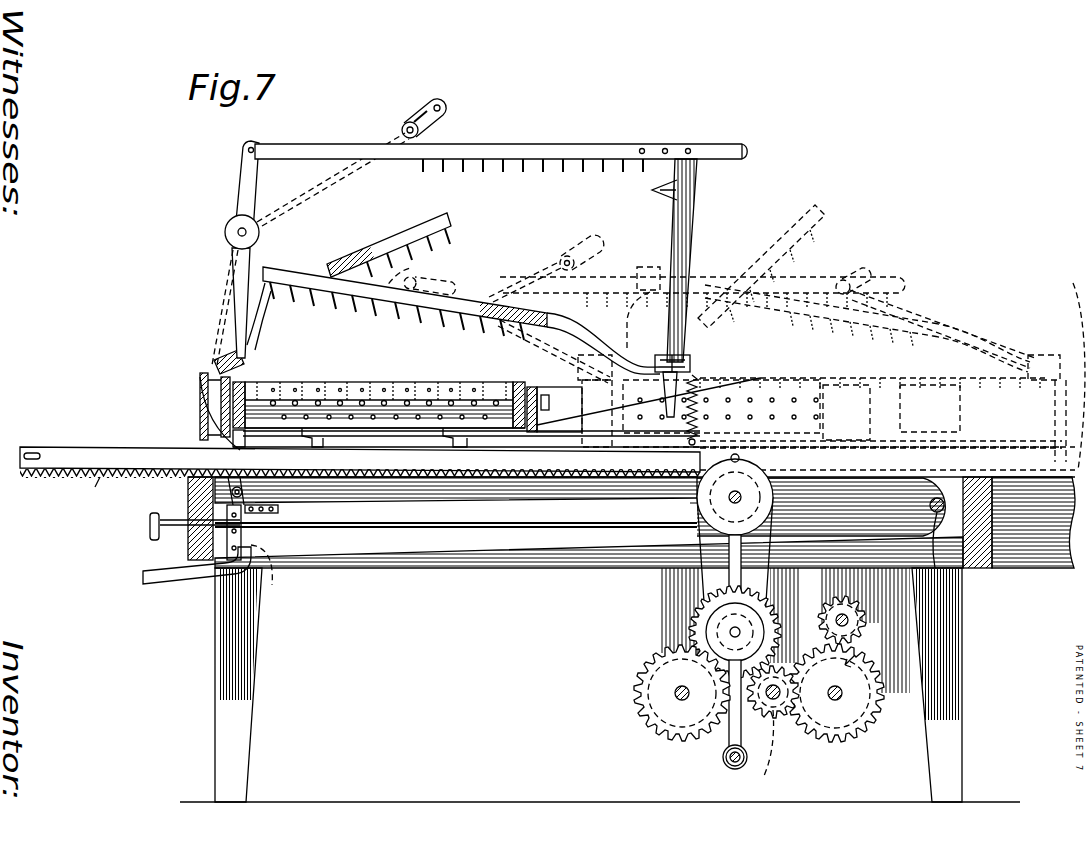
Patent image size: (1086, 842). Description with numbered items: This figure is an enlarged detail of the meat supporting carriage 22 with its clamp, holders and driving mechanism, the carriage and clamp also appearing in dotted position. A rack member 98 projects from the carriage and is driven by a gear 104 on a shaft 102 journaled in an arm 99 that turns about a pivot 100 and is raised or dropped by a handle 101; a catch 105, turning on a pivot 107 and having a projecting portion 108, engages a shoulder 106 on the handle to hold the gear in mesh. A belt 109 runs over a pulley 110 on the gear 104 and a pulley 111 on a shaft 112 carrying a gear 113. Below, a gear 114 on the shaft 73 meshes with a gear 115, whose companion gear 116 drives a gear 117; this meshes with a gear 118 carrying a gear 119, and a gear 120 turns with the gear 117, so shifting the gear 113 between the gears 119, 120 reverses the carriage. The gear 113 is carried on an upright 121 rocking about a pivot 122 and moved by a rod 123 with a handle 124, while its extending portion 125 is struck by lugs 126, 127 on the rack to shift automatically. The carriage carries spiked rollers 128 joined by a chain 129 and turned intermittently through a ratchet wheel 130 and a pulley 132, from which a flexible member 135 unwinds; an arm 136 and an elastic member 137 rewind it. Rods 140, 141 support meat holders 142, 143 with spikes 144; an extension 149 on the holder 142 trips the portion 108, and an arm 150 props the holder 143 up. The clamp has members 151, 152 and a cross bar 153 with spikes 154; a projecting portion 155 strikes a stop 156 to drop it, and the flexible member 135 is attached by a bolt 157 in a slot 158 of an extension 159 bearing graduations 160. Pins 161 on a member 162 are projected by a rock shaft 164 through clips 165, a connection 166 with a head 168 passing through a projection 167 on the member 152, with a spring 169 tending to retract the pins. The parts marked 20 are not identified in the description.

The legs 20 is at (252, 724).
The carriage 22 is at (262, 392).
The shaft 73 is at (848, 618).
The rack member 98 is at (566, 445).
The member 99 is at (512, 548).
The pivot 100 is at (937, 568).
The handle 101 is at (184, 584).
The shaft 102 is at (742, 497).
The gear 104 is at (705, 512).
The catch 105 is at (244, 540).
The shoulder 106 is at (283, 571).
The pivot 107 is at (216, 494).
The projecting portion 108 is at (210, 433).
The belt 109 is at (700, 584).
The pulley 110 is at (772, 505).
The pulley 111 is at (714, 634).
The shaft 112 is at (728, 628).
The gear 113 is at (768, 622).
The gear 114 is at (858, 625).
The gear 115 is at (866, 675).
The gear 116 is at (862, 712).
The gear 117 is at (790, 735).
The gear 118 is at (658, 732).
The gear 119 is at (648, 672).
The gear 120 is at (752, 756).
The upright 121 is at (733, 572).
The pivot 122 is at (726, 763).
The bar or rod 123 is at (434, 528).
The handle 124 is at (152, 531).
The extending portion 125 is at (698, 470).
The projection 126 is at (743, 462).
The projection 127 is at (46, 452).
The spiked rollers 128 is at (438, 392).
The chain or belt 129 is at (490, 392).
The ratchet wheel 130 is at (220, 397).
The drum or pulley 132 is at (200, 379).
The flexible member 135 is at (296, 199).
The arm 136 is at (238, 447).
The elastic member 137 is at (218, 411).
The rod 140 is at (250, 346).
The rod 141 is at (686, 357).
The meat holder 142 is at (355, 264).
The meat holder 143 is at (832, 285).
The spikes 144 is at (338, 313).
The extension 149 is at (214, 361).
The arm 150 is at (676, 470).
The clamp member 151 is at (240, 193).
The clamp member 152 is at (688, 224).
The cross bar 153 is at (533, 156).
The spikes 154 is at (631, 192).
The projecting portion 155 is at (760, 135).
The stop 156 is at (230, 241).
The bolt 157 is at (404, 126).
The slot 158 is at (434, 109).
The extension 159 is at (446, 125).
The graduations 160 is at (412, 121).
The pins or spikes 161 is at (368, 392).
The member 162 is at (303, 392).
The rock shaft 164 is at (402, 442).
The clips 165 is at (318, 452).
The connection 166 is at (700, 386).
The projection 167 is at (700, 372).
The head 168 is at (696, 354).
The elastic member 169 is at (760, 387).